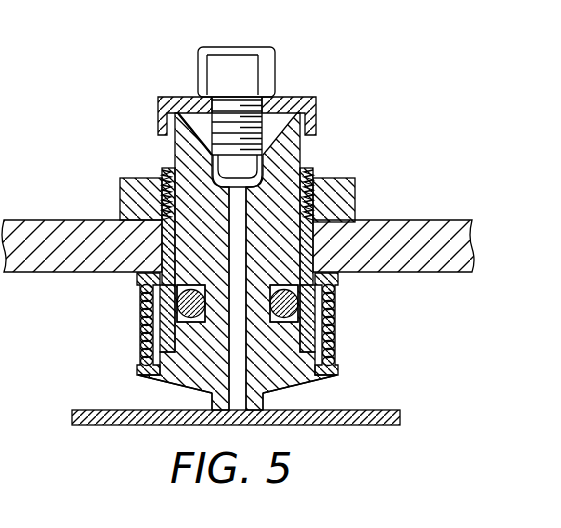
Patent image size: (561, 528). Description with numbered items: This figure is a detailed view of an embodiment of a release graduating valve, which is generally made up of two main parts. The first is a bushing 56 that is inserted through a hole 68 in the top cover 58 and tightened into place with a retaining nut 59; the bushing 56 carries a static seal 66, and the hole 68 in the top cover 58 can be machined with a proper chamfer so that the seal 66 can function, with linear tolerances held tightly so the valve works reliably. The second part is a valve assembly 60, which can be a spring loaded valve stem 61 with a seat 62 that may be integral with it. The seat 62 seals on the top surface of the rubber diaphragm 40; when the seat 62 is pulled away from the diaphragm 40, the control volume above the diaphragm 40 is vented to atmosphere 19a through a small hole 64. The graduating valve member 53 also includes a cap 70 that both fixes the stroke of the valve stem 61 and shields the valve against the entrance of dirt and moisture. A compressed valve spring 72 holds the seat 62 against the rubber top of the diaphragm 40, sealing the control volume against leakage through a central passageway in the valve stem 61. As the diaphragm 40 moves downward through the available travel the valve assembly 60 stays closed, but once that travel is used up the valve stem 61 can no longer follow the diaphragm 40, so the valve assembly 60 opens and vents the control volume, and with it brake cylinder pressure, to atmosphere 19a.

The atmosphere 19a is at (178, 113).
The graduating valve member 53 is at (252, 27).
The cap 70 is at (303, 97).
The small hole 64 is at (302, 150).
The retaining nut 59 is at (118, 200).
The bushing 56 is at (313, 178).
The hole 68 is at (303, 232).
The top cover 58 is at (447, 220).
The static seal 66 is at (158, 262).
The valve spring 72 is at (335, 338).
The valve stem 61 is at (203, 352).
The valve assembly 60 is at (315, 388).
The seat 62 is at (210, 400).
The diaphragm 40 is at (338, 426).